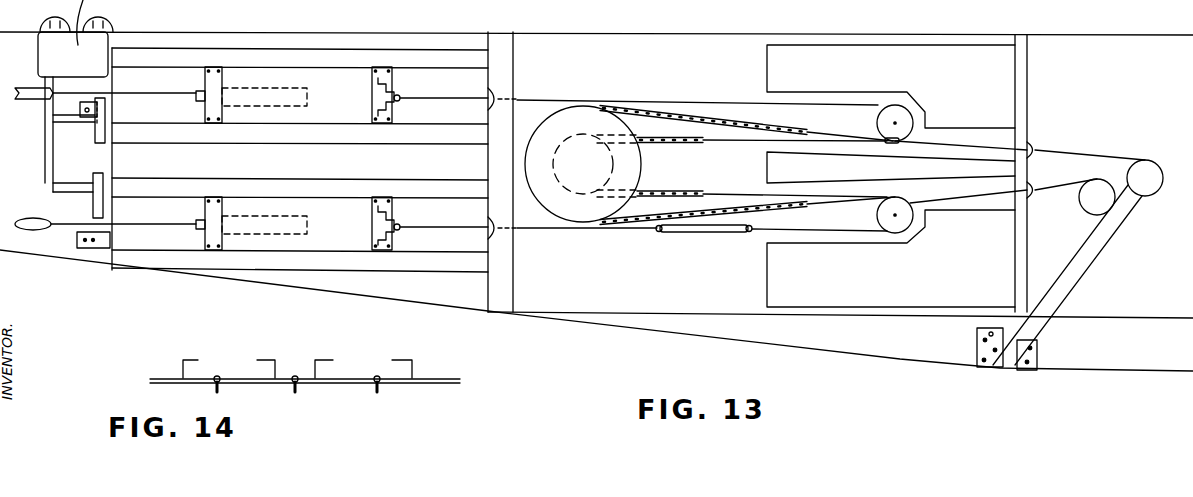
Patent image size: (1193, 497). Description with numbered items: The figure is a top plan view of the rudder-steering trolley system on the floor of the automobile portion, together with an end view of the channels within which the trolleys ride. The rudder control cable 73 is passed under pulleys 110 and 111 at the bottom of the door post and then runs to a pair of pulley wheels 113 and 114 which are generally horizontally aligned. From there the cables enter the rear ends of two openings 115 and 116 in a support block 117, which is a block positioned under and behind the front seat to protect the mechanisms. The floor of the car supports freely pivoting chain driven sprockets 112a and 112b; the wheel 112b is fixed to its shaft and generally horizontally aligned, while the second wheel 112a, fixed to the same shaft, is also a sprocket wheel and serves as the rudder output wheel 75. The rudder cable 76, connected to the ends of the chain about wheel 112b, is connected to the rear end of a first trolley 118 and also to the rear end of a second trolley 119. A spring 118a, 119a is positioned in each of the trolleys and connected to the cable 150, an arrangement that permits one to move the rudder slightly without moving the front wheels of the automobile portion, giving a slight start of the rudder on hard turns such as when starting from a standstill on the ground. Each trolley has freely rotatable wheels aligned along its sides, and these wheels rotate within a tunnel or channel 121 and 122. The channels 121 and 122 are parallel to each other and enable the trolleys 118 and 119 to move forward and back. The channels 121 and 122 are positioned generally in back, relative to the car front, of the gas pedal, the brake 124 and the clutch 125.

In FIG. 13, the rudder control cable 73 is at (1092, 262).
In FIG. 13, the rudder output sprocket wheel system 75 is at (540, 115).
In FIG. 13, the rudder cable 76 is at (731, 138).
In FIG. 13, the pulley 110 is at (977, 352).
In FIG. 13, the pulley 111 is at (1037, 346).
In FIG. 13, the sprocket wheel 112a is at (562, 104).
In FIG. 13, the sprocket wheel 112b is at (572, 185).
In FIG. 13, the pulley wheel 113 is at (1152, 160).
In FIG. 13, the pulley wheel 114 is at (1095, 215).
In FIG. 13, the opening 115 is at (1002, 140).
In FIG. 13, the opening 116 is at (1007, 196).
In FIG. 13, the support block 117 is at (948, 65).
In FIG. 13, the first trolley 118 is at (338, 87).
In FIG. 13, the spring 118a is at (253, 90).
In FIG. 13, the second trolley 119 is at (347, 222).
In FIG. 13, the spring 119a is at (272, 222).
In FIG. 13, the channel 121 is at (447, 58).
In FIG. 14, the channel 121 is at (250, 370).
In FIG. 13, the channel 122 is at (187, 187).
In FIG. 14, the channel 122 is at (392, 372).
In FIG. 13, the brake 124 is at (97, 132).
In FIG. 13, the clutch 125 is at (100, 203).
In FIG. 13, the cable 150 is at (167, 93).